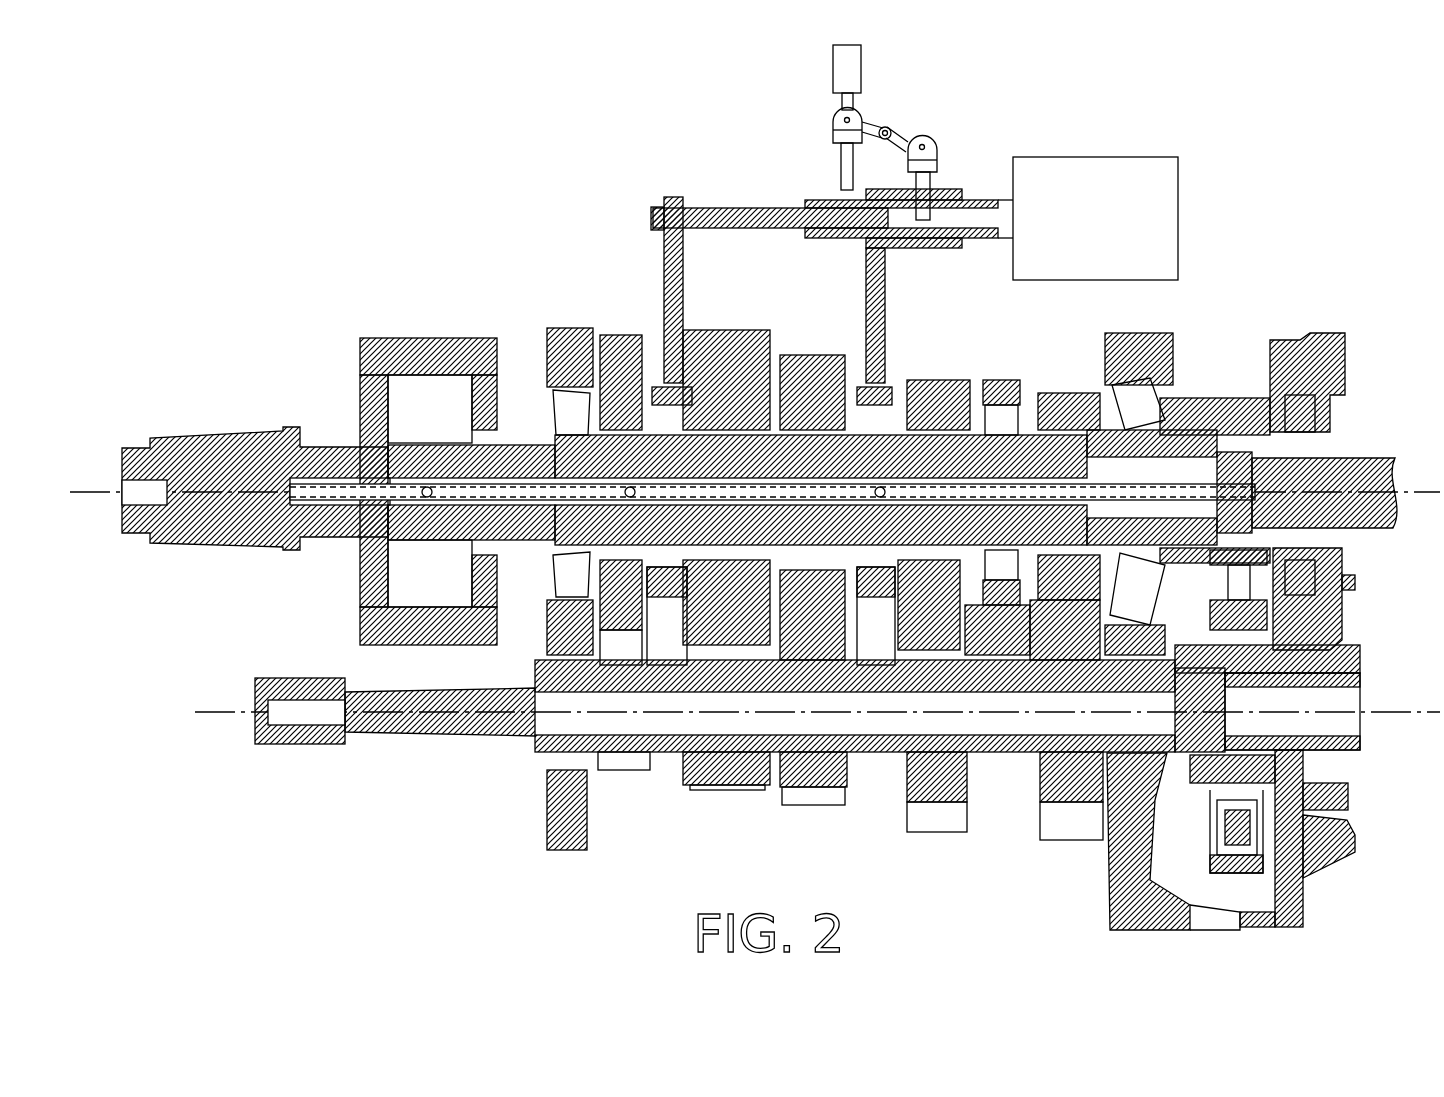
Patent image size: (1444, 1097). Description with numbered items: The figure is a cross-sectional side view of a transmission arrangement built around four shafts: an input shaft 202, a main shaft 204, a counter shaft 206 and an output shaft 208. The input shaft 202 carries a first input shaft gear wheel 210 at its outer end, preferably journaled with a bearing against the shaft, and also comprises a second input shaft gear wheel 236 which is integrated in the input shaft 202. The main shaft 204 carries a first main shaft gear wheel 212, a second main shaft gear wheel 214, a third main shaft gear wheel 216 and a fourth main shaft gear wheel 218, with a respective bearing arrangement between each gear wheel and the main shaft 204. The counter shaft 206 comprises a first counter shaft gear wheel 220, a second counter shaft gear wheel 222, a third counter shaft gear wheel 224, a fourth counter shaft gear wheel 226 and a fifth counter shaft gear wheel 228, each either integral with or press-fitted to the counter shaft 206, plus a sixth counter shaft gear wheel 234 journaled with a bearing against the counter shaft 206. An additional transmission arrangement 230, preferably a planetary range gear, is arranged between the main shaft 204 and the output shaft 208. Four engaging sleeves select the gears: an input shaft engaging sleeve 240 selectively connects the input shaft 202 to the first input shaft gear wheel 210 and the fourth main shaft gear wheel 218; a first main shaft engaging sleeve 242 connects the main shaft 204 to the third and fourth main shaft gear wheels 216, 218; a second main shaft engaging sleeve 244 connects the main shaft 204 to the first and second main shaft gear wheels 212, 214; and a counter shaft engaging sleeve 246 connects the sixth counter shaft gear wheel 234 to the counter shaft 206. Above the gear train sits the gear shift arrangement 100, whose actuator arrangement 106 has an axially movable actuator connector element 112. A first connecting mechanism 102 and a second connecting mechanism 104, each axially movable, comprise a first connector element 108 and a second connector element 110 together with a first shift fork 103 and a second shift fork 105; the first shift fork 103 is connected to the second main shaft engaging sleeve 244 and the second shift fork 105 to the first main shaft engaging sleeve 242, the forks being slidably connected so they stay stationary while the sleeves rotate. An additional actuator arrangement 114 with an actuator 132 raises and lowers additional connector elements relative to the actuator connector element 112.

The gear shift arrangement 100 is at (368, 182).
The first connecting mechanism 102 is at (703, 182).
The first shift fork 103 is at (660, 250).
The second connecting mechanism 104 is at (905, 285).
The second shift fork 105 is at (868, 300).
The actuator arrangement 106 is at (1120, 157).
The first connector element 108 is at (785, 207).
The second connector element 110 is at (953, 192).
The actuator connector element 112 is at (998, 205).
The additional actuator arrangement 114 is at (912, 97).
The actuator 132 is at (833, 72).
The input shaft 202 is at (1162, 430).
The main shaft 204 is at (520, 400).
The counter shaft 206 is at (1025, 748).
The output shaft 208 is at (204, 438).
The first input shaft gear wheel 210 is at (1075, 393).
The first main shaft gear wheel 212 is at (622, 340).
The second main shaft gear wheel 214 is at (745, 340).
The third main shaft gear wheel 216 is at (828, 355).
The fourth main shaft gear wheel 218 is at (937, 380).
The first counter shaft gear wheel 220 is at (622, 772).
The second counter shaft gear wheel 222 is at (730, 790).
The third counter shaft gear wheel 224 is at (815, 805).
The fourth counter shaft gear wheel 226 is at (935, 832).
The fifth counter shaft gear wheel 228 is at (1060, 842).
The additional transmission arrangement 230 is at (425, 340).
The sixth counter shaft gear wheel 234 is at (1240, 880).
The second input shaft gear wheel 236 is at (1250, 440).
The input shaft engaging sleeve 240 is at (1000, 382).
The first main shaft engaging sleeve 242 is at (895, 387).
The second main shaft engaging sleeve 244 is at (660, 385).
The counter shaft engaging sleeve 246 is at (1185, 825).